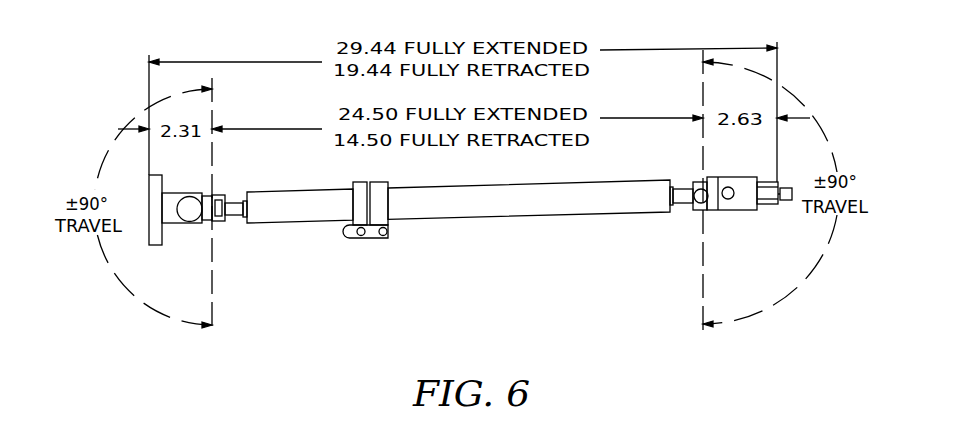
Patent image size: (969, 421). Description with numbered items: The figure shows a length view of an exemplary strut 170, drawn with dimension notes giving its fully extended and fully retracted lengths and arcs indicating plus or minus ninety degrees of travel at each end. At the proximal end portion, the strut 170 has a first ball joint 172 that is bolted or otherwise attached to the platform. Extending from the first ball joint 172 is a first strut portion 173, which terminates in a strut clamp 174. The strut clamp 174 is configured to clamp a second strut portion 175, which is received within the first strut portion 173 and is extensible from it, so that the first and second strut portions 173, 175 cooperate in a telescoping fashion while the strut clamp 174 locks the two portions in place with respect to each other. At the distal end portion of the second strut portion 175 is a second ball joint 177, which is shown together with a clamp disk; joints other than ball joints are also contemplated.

The strut 170 is at (320, 275).
The first ball joint 172 is at (712, 212).
The first strut portion 173 is at (620, 180).
The strut clamp 174 is at (361, 239).
The second strut portion 175 is at (317, 190).
The second ball joint 177 is at (193, 224).